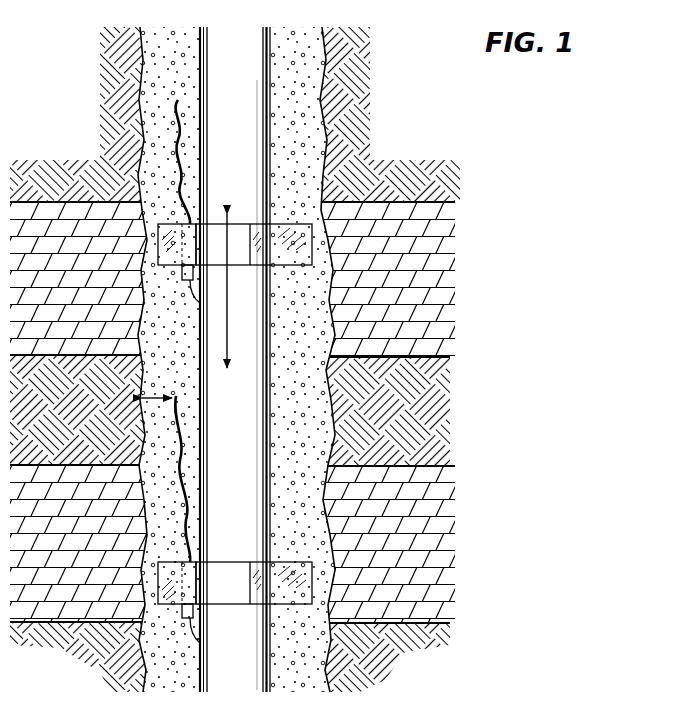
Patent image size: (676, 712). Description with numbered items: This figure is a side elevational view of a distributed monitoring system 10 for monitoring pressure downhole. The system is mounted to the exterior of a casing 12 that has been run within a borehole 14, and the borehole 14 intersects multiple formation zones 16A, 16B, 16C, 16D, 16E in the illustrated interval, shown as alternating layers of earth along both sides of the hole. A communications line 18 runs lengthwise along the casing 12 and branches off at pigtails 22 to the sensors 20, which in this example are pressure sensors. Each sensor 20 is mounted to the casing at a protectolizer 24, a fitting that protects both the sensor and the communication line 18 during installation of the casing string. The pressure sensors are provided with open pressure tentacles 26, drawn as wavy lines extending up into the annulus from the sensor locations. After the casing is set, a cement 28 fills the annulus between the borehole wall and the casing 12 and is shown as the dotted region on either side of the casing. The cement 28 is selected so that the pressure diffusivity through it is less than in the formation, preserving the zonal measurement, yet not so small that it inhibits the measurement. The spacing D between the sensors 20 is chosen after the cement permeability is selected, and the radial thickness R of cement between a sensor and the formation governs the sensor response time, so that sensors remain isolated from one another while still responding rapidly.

The distributed monitoring system 10 is at (112, 232).
The casing 12 is at (246, 64).
The borehole 14 is at (300, 106).
The zone 16A is at (82, 140).
The zone 16B is at (83, 287).
The zone 16C is at (82, 422).
The zone 16D is at (83, 547).
The zone 16E is at (83, 677).
The communications line 18 is at (212, 401).
The sensors 20 is at (187, 580).
The pigtails 22 is at (187, 285).
The protectolizers 24 is at (247, 590).
The open pressure tentacles 26 is at (178, 101).
The cement 28 is at (314, 362).
The spacing between sensors D is at (222, 291).
The cement thickness R is at (157, 384).